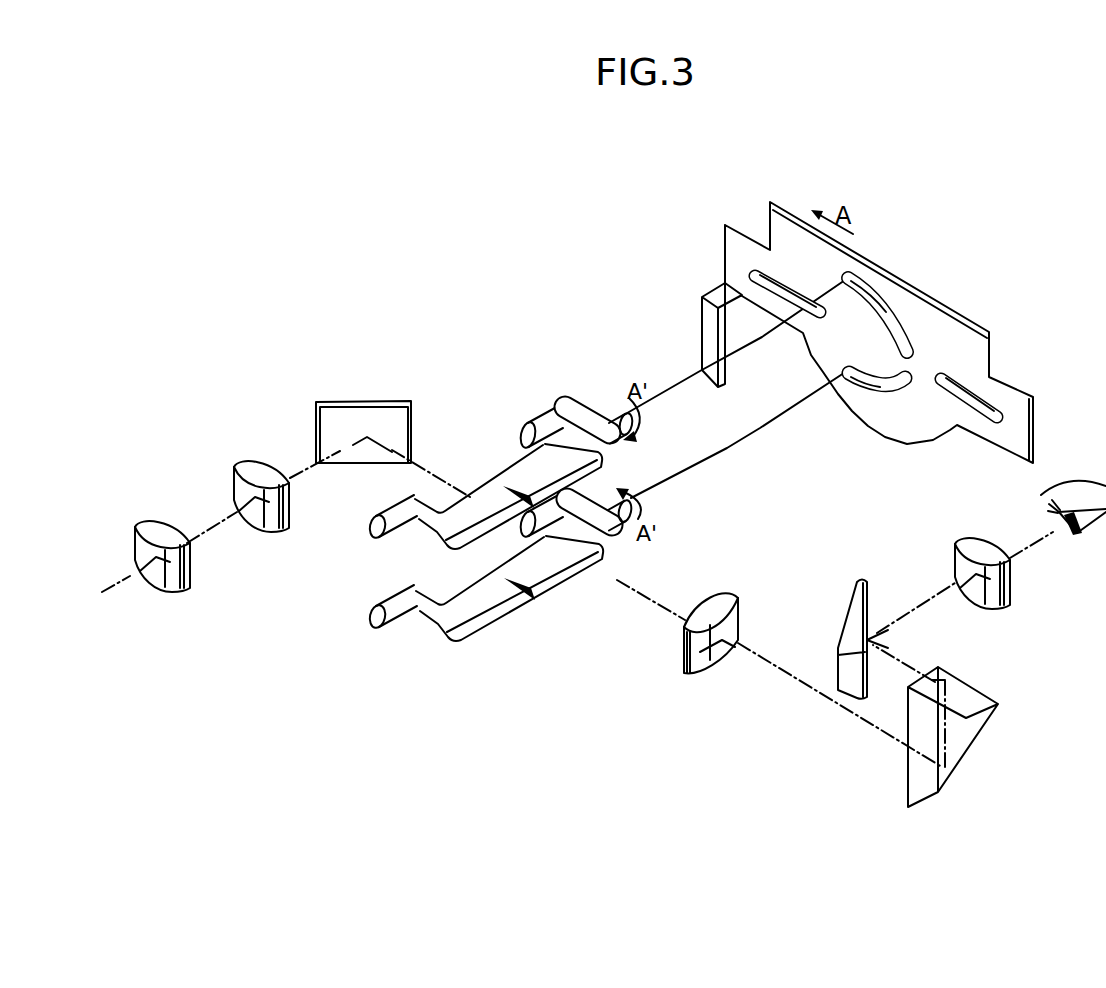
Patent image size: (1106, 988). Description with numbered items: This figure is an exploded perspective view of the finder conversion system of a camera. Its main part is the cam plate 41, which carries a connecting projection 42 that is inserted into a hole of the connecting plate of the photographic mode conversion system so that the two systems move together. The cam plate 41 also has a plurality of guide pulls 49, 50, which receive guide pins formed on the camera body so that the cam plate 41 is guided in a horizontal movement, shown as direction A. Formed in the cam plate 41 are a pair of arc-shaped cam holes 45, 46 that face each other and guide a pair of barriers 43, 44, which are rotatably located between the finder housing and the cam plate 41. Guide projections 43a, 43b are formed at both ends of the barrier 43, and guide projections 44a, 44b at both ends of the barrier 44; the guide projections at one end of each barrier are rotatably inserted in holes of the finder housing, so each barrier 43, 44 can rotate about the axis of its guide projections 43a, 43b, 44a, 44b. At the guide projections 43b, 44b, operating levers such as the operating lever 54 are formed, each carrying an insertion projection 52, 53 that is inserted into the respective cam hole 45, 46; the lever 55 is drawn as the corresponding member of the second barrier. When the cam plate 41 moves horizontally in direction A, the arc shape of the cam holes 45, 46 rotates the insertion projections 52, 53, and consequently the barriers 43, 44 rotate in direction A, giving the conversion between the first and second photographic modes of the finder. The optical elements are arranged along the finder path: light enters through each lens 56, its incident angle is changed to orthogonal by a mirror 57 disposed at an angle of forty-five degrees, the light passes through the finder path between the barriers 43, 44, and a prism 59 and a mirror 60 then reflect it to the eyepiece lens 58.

The cam plate 41 is at (780, 233).
The connecting projection 42 is at (712, 336).
The barrier 43 is at (443, 529).
The guide projection 43a is at (367, 530).
The guide projection 43b is at (532, 423).
The barrier 44 is at (448, 625).
The guide projection 44a is at (375, 636).
The guide projection 44b is at (560, 535).
The cam hole 45 is at (890, 308).
The cam hole 46 is at (863, 390).
The guide pull 49 is at (746, 284).
The guide pull 50 is at (993, 402).
The insertion projection 52 is at (617, 408).
The insertion projection 53 is at (640, 503).
The operating lever 54 is at (573, 396).
The bushing 55 is at (610, 540).
The lens 56 is at (150, 525).
The mirror 57 is at (362, 402).
The eyepiece lens 58 is at (965, 542).
The prism 59 is at (963, 690).
The mirror 60 is at (857, 608).